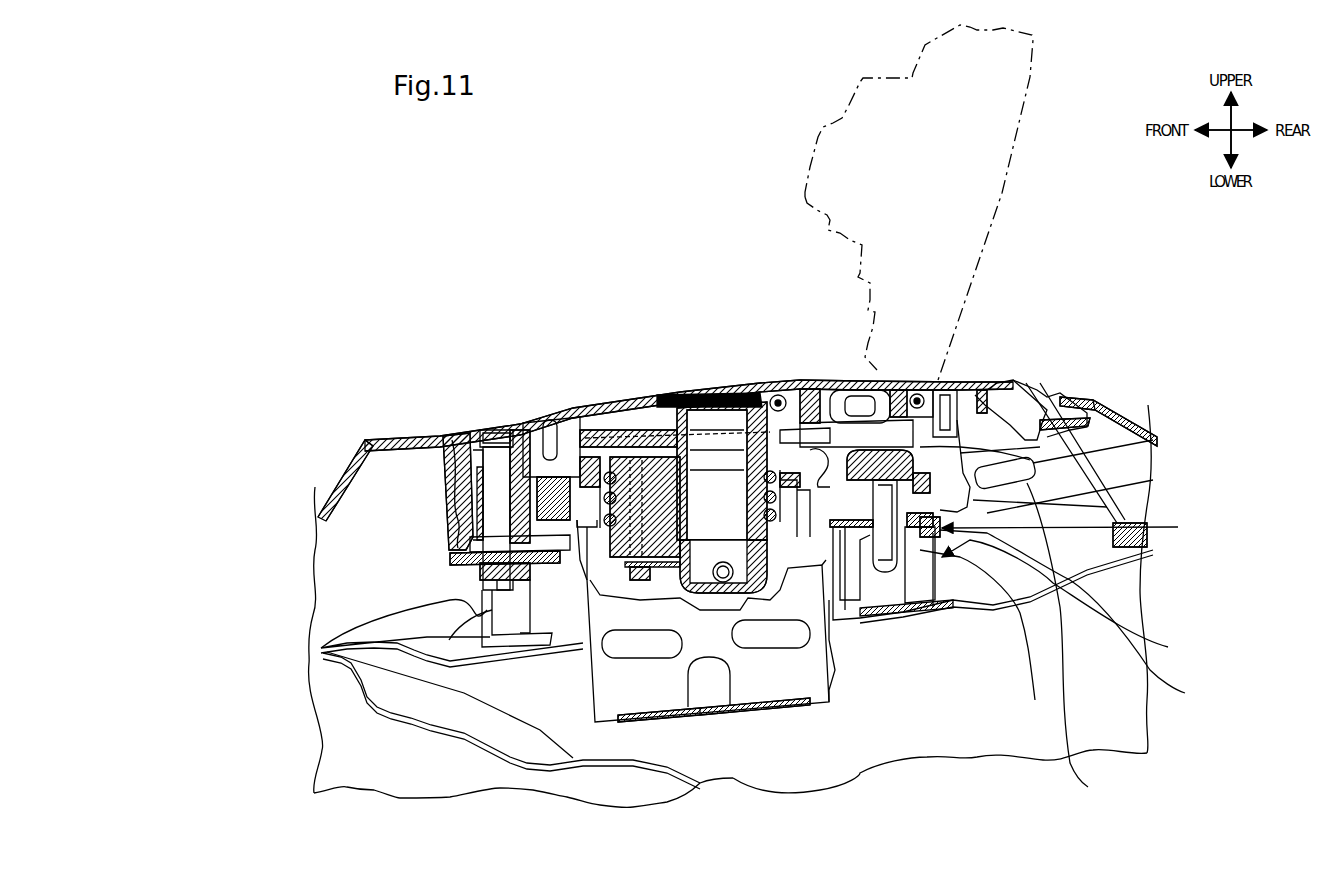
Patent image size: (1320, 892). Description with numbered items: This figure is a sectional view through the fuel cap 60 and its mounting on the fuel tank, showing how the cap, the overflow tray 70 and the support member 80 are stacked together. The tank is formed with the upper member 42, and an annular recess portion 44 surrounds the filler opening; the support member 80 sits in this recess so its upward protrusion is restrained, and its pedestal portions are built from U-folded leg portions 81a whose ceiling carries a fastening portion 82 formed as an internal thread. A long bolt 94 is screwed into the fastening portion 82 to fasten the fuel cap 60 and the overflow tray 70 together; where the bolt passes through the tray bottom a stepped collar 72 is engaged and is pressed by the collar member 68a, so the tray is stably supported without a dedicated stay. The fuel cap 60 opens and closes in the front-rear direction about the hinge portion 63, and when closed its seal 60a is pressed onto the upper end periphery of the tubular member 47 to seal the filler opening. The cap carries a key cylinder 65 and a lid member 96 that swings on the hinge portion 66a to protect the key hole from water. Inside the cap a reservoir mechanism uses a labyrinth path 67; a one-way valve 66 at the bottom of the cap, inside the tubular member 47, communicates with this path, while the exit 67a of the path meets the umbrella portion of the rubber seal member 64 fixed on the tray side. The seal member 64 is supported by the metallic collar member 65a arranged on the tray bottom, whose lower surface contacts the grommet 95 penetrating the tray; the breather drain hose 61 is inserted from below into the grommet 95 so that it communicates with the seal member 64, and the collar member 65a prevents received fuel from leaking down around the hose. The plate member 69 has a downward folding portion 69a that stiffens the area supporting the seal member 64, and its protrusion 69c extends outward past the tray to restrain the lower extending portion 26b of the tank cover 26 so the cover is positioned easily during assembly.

The tank cover 26 is at (350, 468).
The lower extending portion 26b is at (443, 513).
The upper member 42 is at (767, 745).
The annular recess portion 44 is at (321, 648).
The tubular member 47 is at (810, 672).
The fuel cap 60 is at (547, 402).
The seal 60a is at (573, 410).
The breather drain hose 61 is at (900, 590).
The hinge portion 63 is at (962, 385).
The seal member 64 is at (1033, 397).
The key cylinder 65 is at (722, 396).
The collar member 65a is at (1068, 465).
The one-way valve 66 is at (637, 575).
The hinge portion 66a is at (770, 394).
The labyrinth path 67 is at (680, 393).
The exit 67a is at (848, 380).
The collar member 68a is at (490, 460).
The plate member 69 is at (1078, 618).
The folding portion 69a is at (940, 600).
The protrusion 69c is at (450, 565).
The overflow tray 70 is at (470, 497).
The stepped collar 72 is at (450, 546).
The support member 80 is at (1017, 641).
The leg portion 81a is at (449, 640).
The fastening portion 82 is at (482, 600).
The long bolt 94 is at (496, 470).
The grommet 95 is at (1068, 598).
The lid member 96 is at (713, 390).